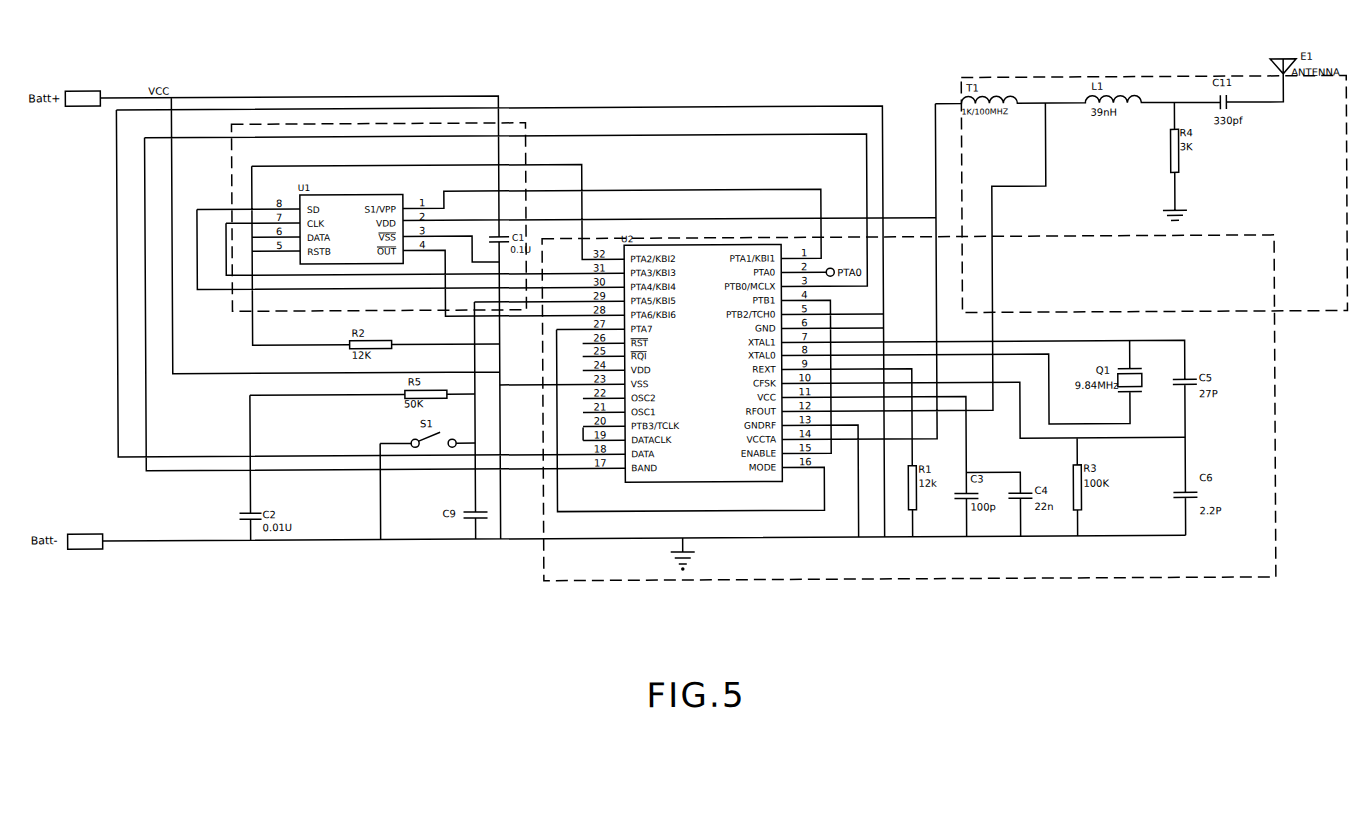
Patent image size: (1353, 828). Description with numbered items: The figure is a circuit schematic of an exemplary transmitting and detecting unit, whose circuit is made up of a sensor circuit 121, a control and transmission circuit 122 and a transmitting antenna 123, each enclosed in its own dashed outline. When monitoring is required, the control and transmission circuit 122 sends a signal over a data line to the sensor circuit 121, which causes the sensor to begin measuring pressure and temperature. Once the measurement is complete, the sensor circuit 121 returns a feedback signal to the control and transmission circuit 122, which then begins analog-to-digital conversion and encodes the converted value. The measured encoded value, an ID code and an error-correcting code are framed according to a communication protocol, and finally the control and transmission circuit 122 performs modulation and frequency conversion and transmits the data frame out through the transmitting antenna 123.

The sensor circuit 121 is at (340, 123).
The control and transmission circuit 122 is at (633, 560).
The transmitting antenna 123 is at (1298, 278).